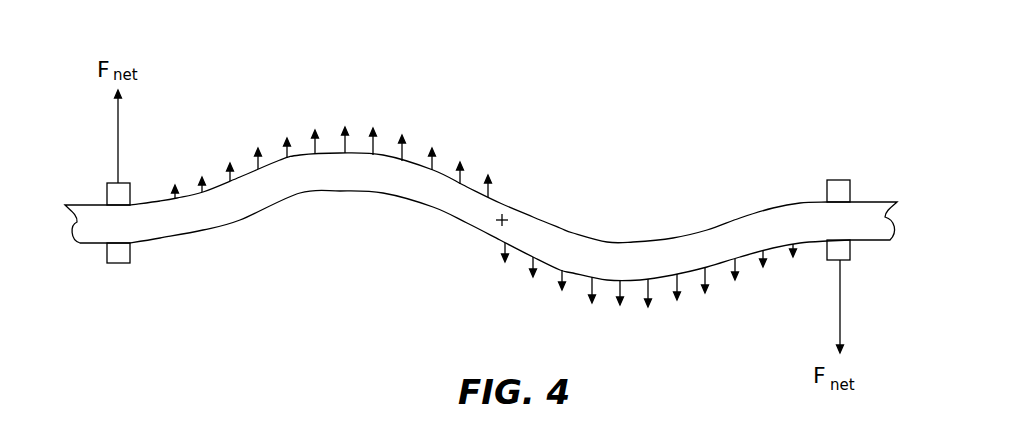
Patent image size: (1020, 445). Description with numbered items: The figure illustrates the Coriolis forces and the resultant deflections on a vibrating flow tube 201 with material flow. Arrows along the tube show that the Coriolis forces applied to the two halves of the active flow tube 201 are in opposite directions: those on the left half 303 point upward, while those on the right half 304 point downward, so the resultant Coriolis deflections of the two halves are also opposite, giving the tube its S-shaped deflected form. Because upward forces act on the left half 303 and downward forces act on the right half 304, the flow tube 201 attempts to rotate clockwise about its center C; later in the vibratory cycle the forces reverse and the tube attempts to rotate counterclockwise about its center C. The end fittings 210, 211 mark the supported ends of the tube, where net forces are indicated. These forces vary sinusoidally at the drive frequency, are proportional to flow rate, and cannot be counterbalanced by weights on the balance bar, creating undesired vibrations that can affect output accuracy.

The flow tube 201 is at (193, 231).
The left clamp 210 is at (115, 264).
The right clamp 211 is at (838, 180).
The left half 303 is at (382, 104).
The right half 304 is at (648, 205).
The center C is at (510, 213).